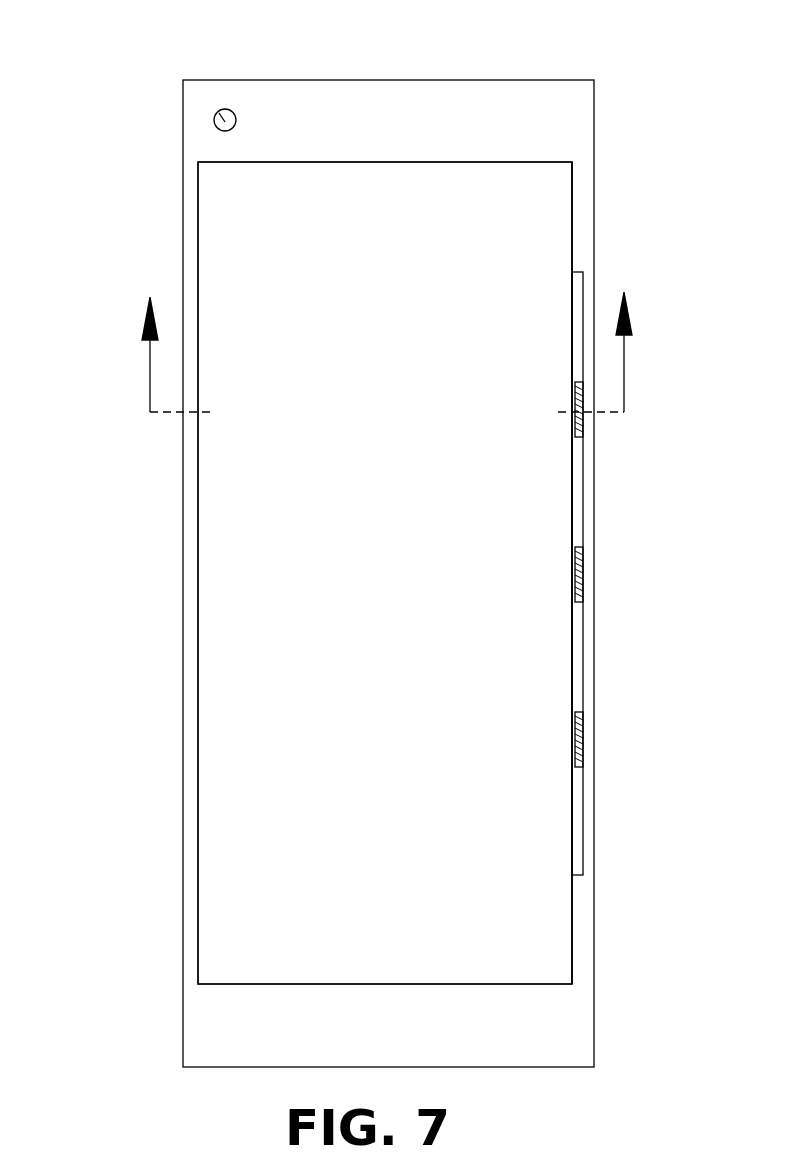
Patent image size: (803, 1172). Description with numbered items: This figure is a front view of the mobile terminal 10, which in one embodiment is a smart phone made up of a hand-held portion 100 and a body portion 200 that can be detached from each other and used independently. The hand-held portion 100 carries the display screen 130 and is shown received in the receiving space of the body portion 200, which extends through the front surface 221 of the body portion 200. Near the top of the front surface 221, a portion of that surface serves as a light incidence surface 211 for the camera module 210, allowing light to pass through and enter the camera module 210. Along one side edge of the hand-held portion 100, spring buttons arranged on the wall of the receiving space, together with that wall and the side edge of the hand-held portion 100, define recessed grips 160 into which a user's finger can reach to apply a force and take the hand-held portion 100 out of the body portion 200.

The mobile terminal 10 is at (148, 81).
The hand-held portion 100 is at (228, 539).
The display screen 130 is at (265, 716).
The recessed grip 160 is at (579, 722).
The body portion 200 is at (213, 1024).
The camera module 210 is at (218, 112).
The light incidence surface 211 is at (232, 112).
The front surface 221 is at (572, 142).